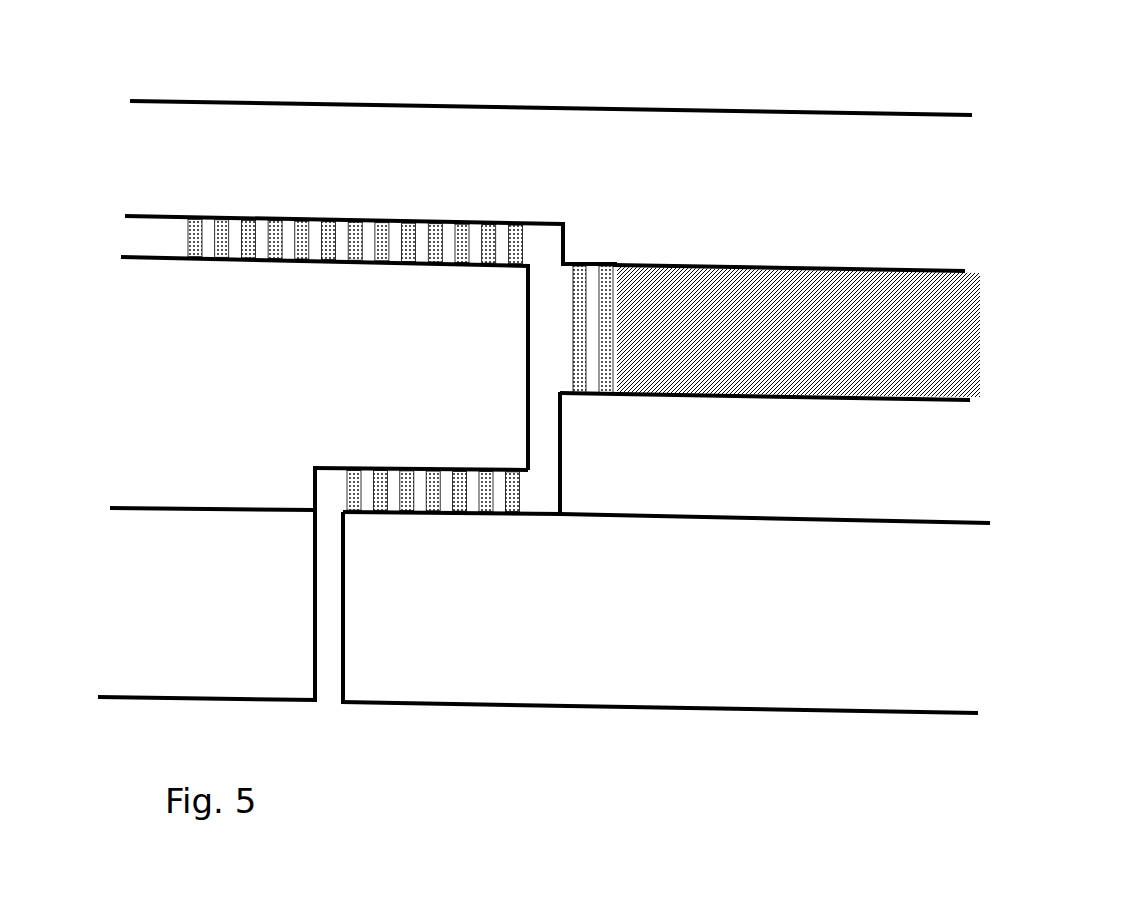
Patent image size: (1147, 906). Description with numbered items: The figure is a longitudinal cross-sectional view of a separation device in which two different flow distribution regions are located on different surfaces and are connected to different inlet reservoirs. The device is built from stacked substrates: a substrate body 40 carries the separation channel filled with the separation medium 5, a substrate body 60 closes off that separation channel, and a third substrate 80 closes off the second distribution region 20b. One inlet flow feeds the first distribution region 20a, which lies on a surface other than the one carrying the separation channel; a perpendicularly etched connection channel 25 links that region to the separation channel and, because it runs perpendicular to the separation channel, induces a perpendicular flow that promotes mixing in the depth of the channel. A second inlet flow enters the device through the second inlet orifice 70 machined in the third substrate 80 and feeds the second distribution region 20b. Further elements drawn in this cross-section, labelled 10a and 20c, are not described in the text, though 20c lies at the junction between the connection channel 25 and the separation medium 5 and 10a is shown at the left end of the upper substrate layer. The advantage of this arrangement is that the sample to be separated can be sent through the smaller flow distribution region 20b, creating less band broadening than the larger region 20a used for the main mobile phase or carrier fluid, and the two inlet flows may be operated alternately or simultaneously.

The separation medium 5 is at (825, 357).
The first redistribution layer 10a is at (160, 230).
The first distribution region 20a is at (348, 223).
The second distribution region 20b is at (428, 490).
The third contact structure 20c is at (593, 298).
The connection channel 25 is at (562, 338).
The substrate body 40 is at (847, 490).
The substrate body 60 is at (883, 212).
The second inlet orifice 70 is at (327, 678).
The third substrate 80 is at (847, 667).